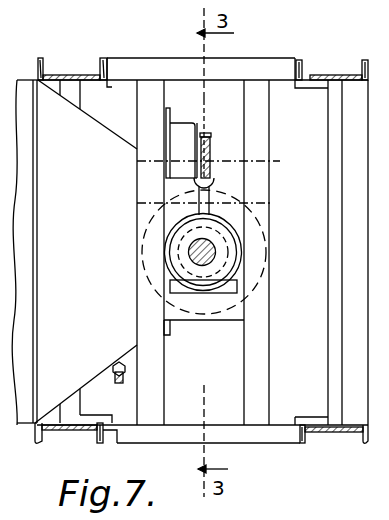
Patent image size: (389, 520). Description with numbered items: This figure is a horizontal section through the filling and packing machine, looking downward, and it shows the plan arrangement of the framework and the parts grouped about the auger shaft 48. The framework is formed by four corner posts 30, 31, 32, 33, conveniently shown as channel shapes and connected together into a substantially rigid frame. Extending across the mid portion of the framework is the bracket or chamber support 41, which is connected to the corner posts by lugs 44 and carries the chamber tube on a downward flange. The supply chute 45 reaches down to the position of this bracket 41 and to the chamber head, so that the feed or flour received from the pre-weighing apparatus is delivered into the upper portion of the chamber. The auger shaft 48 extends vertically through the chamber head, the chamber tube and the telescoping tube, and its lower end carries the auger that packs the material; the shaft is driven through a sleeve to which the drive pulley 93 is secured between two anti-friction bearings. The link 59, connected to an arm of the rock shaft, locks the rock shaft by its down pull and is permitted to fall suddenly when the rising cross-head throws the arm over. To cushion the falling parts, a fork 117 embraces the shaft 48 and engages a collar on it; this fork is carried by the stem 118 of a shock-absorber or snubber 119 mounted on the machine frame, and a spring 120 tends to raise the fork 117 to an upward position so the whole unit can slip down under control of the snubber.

The corner post 30 is at (333, 432).
The corner post 31 is at (326, 73).
The corner post 32 is at (78, 75).
The corner post 33 is at (63, 431).
The bracket or chamber support 41 is at (122, 98).
The lugs 44 is at (117, 58).
The supply chute 45 is at (86, 251).
The auger shaft 48 is at (213, 250).
The link 59 is at (116, 383).
The drive pulley 93 is at (253, 297).
The fork 117 is at (232, 282).
The stem 118 is at (212, 146).
The shock-absorber or snubber 119 is at (184, 137).
The spring 120 is at (213, 183).